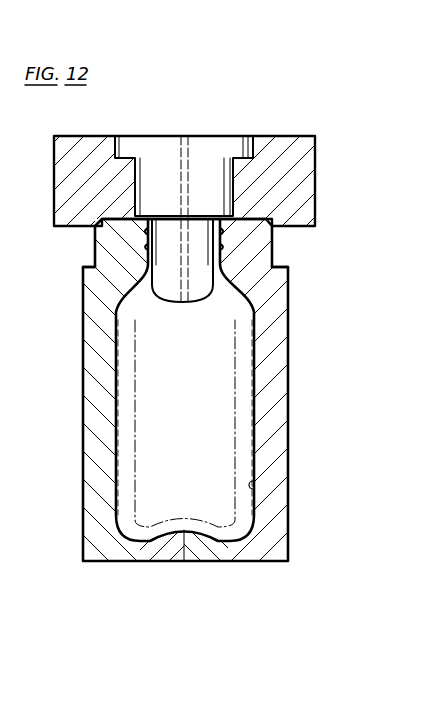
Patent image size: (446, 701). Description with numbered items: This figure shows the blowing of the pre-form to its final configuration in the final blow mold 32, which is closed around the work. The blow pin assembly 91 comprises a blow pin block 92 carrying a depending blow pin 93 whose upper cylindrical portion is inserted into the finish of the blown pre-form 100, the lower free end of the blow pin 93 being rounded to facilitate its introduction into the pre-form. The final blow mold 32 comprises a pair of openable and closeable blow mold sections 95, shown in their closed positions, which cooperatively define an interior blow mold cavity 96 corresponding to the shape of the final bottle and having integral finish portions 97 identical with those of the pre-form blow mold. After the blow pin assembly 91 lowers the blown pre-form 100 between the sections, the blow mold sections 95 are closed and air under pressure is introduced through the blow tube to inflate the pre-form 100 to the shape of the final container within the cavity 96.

The blow pin assembly 91 is at (320, 150).
The blow pin block 92 is at (306, 194).
The finish portions 97 is at (223, 240).
The blow pin projection 93 is at (192, 284).
The blown pre-form 100 is at (135, 363).
The final blow mold 32 is at (289, 366).
The blow mold sections 95 is at (275, 422).
The blow mold cavity 96 is at (254, 484).